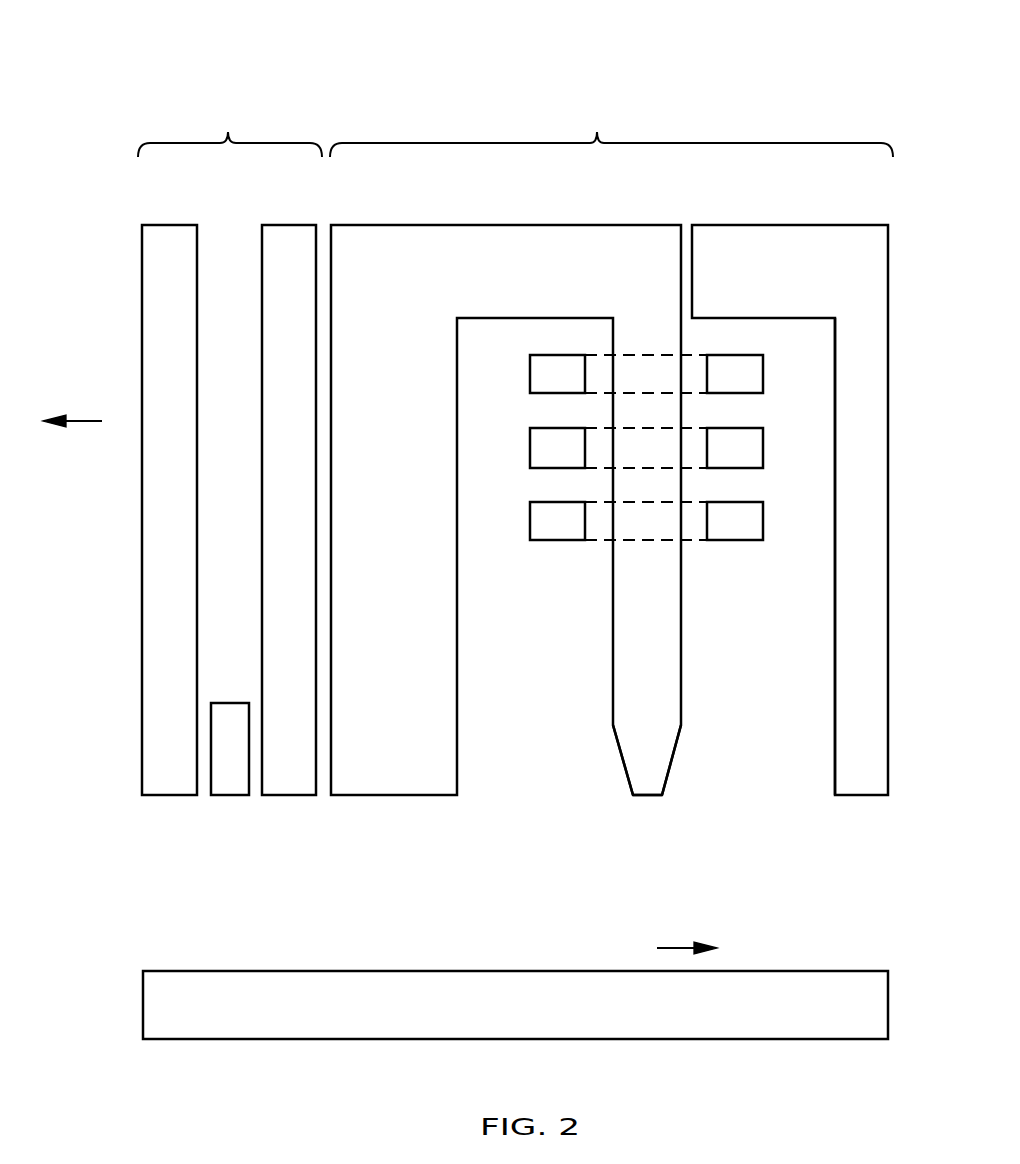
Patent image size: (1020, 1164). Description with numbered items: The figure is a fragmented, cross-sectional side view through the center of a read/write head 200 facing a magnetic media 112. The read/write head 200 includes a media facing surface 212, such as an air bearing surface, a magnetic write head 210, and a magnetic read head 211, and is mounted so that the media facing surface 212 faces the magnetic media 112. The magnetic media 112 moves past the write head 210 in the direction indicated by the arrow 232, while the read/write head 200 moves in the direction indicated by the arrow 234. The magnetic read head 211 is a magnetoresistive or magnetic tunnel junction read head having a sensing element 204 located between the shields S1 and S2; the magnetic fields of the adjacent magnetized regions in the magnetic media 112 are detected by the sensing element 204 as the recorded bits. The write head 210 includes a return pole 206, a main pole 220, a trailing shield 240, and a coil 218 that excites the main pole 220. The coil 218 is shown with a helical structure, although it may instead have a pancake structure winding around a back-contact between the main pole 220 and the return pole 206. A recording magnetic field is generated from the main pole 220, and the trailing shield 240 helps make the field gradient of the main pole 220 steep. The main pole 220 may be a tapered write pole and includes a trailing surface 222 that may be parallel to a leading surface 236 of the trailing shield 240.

The read/write head 200 is at (141, 51).
The magnetic read head 211 is at (230, 131).
The magnetic write head 210 is at (611, 131).
The MR shield S1 is at (165, 795).
The MR sensing element 204 is at (230, 795).
The MR shield S2 is at (292, 795).
The return pole 206 is at (394, 795).
The coil 218 is at (557, 540).
The main pole 220 is at (622, 754).
The trailing surface 222 is at (683, 712).
The media facing surface 212 is at (648, 795).
The leading surface 236 is at (834, 622).
The trailing shield 240 is at (889, 757).
The arrow 234 is at (83, 419).
The arrow 232 is at (674, 945).
The magnetic media 112 is at (889, 1002).